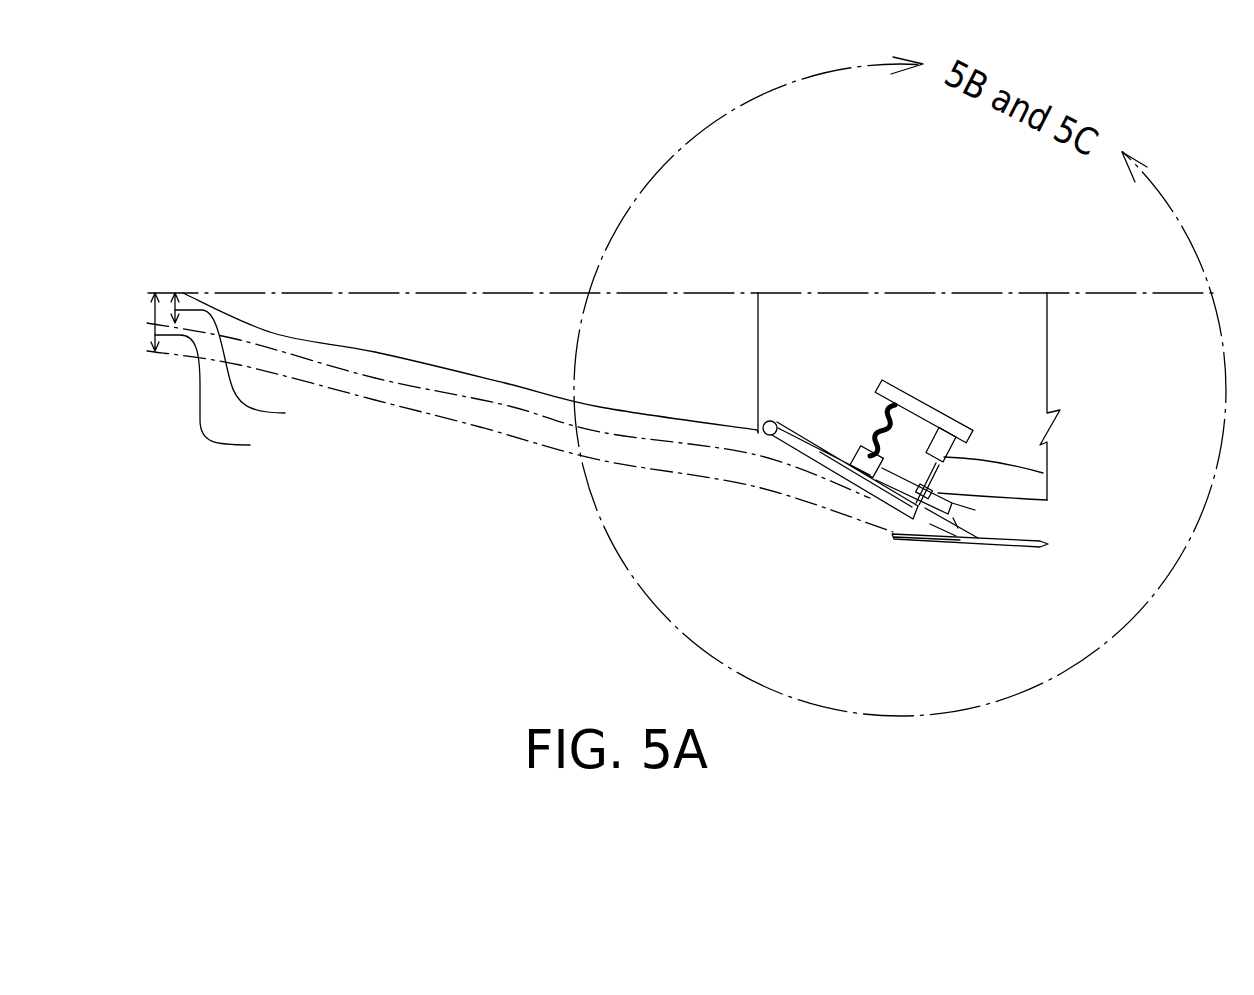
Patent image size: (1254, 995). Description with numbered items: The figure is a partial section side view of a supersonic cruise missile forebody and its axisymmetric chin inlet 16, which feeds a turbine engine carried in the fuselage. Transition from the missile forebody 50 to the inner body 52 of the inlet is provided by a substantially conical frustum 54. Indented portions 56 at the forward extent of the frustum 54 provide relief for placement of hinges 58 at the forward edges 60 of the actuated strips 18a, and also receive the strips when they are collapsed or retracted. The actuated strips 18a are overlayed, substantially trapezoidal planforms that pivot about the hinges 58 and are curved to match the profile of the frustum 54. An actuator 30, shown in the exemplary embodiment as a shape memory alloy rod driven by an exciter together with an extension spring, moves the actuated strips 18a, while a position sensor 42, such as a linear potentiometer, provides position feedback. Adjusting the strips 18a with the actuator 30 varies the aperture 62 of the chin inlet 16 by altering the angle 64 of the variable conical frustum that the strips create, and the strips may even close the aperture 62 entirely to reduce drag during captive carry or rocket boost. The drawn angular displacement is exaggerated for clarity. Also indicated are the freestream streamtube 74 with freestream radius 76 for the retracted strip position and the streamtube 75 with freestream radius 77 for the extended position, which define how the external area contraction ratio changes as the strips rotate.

The axisymmetric chin inlet 16 is at (893, 538).
The actuated strip 18a is at (845, 497).
The actuator 30 is at (900, 407).
The position sensor 42 is at (1047, 479).
The missile forebody 50 is at (482, 385).
The inner body 52 is at (1015, 500).
The conical frustum 54 is at (927, 452).
The indented portion 56 is at (822, 446).
The hinge 58 is at (777, 420).
The forward edge 60 is at (763, 443).
The aperture 62 is at (929, 522).
The angle 64 is at (953, 518).
The streamtube 74 is at (643, 468).
The streamtube 75 is at (635, 442).
The freestream radius h_s 76 is at (219, 398).
The freestream radius h_r 77 is at (247, 369).